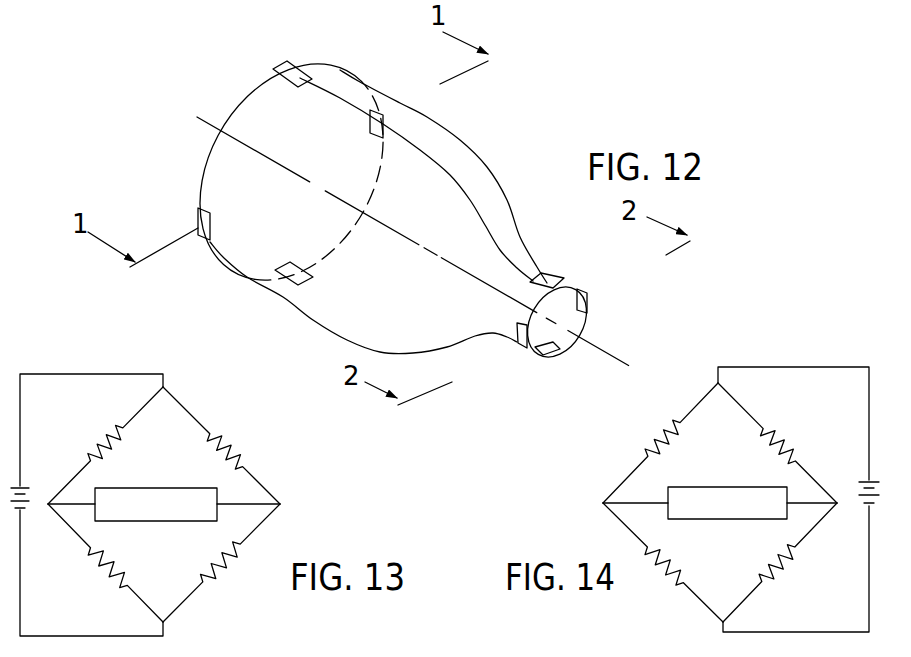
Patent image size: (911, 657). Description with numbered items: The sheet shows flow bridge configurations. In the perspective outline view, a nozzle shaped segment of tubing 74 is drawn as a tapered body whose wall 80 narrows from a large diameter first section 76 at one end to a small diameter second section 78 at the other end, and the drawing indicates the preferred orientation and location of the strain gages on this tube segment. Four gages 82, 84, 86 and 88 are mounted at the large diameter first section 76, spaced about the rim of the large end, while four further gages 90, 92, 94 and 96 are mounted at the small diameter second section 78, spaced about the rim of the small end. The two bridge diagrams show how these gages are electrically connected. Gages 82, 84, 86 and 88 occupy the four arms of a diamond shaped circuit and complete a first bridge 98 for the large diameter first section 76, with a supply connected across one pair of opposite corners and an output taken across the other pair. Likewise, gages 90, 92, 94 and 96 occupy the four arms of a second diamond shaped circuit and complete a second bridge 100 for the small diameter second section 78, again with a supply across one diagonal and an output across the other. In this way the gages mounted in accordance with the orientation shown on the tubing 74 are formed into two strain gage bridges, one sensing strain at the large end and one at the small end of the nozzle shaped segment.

In FIG. 12, the nozzle shaped segment of tubing 74 is at (486, 132).
In FIG. 12, the large diameter first section 76 is at (371, 93).
In FIG. 12, the small diameter second section 78 is at (563, 277).
In FIG. 12, the side wall 80 is at (512, 207).
In FIG. 12, the gage 82 is at (383, 116).
In FIG. 13, the gage 82 is at (230, 437).
In FIG. 12, the gage 84 is at (198, 228).
In FIG. 13, the gage 84 is at (102, 560).
In FIG. 12, the gage 86 is at (296, 70).
In FIG. 13, the gage 86 is at (115, 435).
In FIG. 12, the gage 88 is at (290, 282).
In FIG. 13, the gage 88 is at (222, 577).
In FIG. 12, the gage 90 is at (588, 303).
In FIG. 14, the gage 90 is at (672, 573).
In FIG. 12, the gage 92 is at (518, 343).
In FIG. 14, the gage 92 is at (782, 435).
In FIG. 12, the gage 94 is at (543, 282).
In FIG. 14, the gage 94 is at (788, 560).
In FIG. 12, the gage 96 is at (555, 355).
In FIG. 14, the gage 96 is at (668, 433).
In FIG. 13, the first bridge 98 is at (177, 505).
In FIG. 14, the second bridge 100 is at (697, 500).